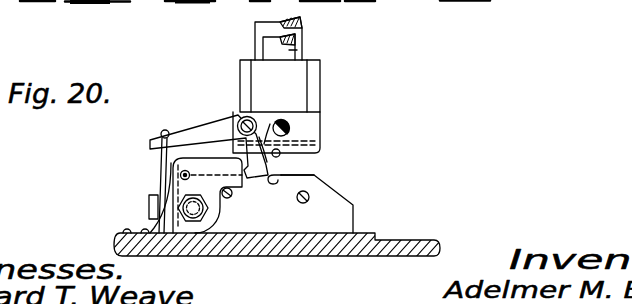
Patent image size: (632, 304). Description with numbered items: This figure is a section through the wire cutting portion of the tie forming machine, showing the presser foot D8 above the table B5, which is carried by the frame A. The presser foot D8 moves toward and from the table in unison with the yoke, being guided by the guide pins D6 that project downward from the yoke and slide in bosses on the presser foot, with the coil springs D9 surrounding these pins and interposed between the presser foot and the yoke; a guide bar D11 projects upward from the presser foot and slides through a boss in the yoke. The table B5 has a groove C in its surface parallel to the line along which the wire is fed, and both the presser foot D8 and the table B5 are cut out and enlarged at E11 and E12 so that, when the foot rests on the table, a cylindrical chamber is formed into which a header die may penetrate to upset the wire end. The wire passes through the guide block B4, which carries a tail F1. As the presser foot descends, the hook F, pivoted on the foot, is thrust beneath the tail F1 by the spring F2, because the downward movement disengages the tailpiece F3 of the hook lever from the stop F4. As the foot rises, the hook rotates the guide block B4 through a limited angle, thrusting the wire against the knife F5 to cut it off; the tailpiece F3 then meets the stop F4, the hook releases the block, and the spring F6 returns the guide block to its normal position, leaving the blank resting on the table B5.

The frame A is at (413, 240).
The guide block B4 is at (200, 158).
The table B5 is at (345, 208).
The groove C is at (300, 177).
The guide pins D6 is at (297, 50).
The presser foot D8 is at (320, 120).
The coil springs D9 is at (281, 150).
The guide bar D11 is at (303, 28).
The cut-out in presser foot E11 is at (280, 155).
The cut-out in table E12 is at (276, 186).
The hook F is at (262, 182).
The tail F1 is at (234, 188).
The spring F2 is at (274, 112).
The tailpiece F3 is at (210, 128).
The stop F4 is at (161, 130).
The knife F5 is at (162, 163).
The spring F6 is at (161, 195).